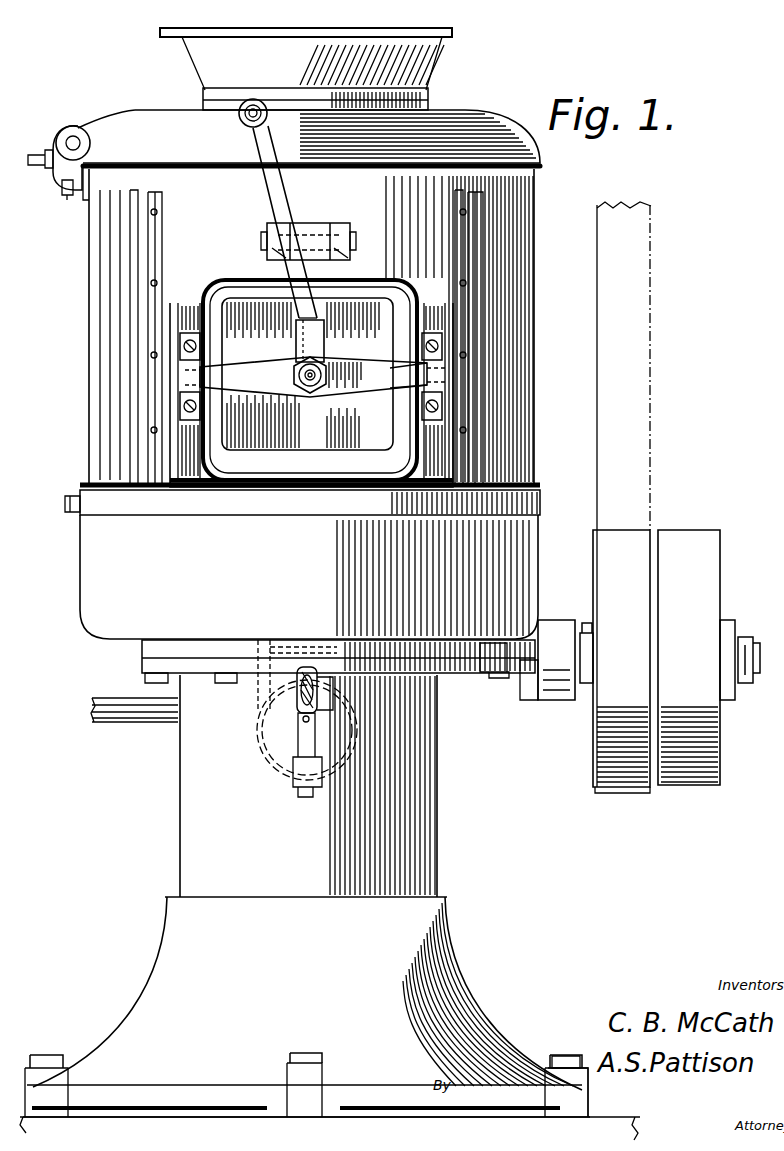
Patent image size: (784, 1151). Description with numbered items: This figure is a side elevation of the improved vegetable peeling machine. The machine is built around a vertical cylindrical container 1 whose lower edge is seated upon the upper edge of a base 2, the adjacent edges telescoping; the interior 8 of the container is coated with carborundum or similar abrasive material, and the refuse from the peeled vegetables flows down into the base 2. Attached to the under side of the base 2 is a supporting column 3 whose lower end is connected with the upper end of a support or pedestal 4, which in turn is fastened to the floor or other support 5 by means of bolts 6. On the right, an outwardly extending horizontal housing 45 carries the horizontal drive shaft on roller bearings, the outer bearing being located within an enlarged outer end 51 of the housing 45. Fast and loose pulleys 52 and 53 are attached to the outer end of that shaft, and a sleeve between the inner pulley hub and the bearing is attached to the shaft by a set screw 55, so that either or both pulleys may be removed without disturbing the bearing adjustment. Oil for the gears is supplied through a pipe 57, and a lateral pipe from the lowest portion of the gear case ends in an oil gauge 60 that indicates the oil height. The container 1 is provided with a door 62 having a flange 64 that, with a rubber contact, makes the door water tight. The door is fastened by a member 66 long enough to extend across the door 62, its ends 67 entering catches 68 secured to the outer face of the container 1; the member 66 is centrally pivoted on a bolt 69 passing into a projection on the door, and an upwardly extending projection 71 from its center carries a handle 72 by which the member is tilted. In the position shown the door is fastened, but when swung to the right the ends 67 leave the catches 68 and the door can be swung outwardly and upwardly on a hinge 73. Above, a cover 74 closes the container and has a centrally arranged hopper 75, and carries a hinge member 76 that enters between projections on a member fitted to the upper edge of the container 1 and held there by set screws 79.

The vertical cylindrical container 1 is at (525, 181).
The base 2 is at (309, 612).
The supporting column 3 is at (308, 786).
The support or pedestal 4 is at (330, 1018).
The floor or other support 5 is at (594, 1124).
The bolts 6 is at (557, 1058).
The interior of the container 8 is at (187, 378).
The horizontal housing 45 is at (522, 682).
The enlarged outer end of the housing 51 is at (557, 625).
The fast pulley 52 is at (620, 540).
The loose pulley 53 is at (692, 542).
The set screw 55 is at (593, 630).
The oil supply pipe 57 is at (108, 705).
The oil gauge 60 is at (293, 700).
The door 62 is at (250, 308).
The flange 64 is at (388, 290).
The fastening member 66 is at (330, 366).
The ends of the fastening member 67 is at (405, 382).
The catches 68 is at (442, 357).
The bolt 69 is at (310, 380).
The upwardly extending projection 71 is at (306, 340).
The handle 72 is at (272, 196).
The hinge 73 is at (325, 242).
The cover 74 is at (393, 484).
The hopper 75 is at (306, 69).
The hinge member 76 is at (75, 142).
The set screws 79 is at (66, 197).